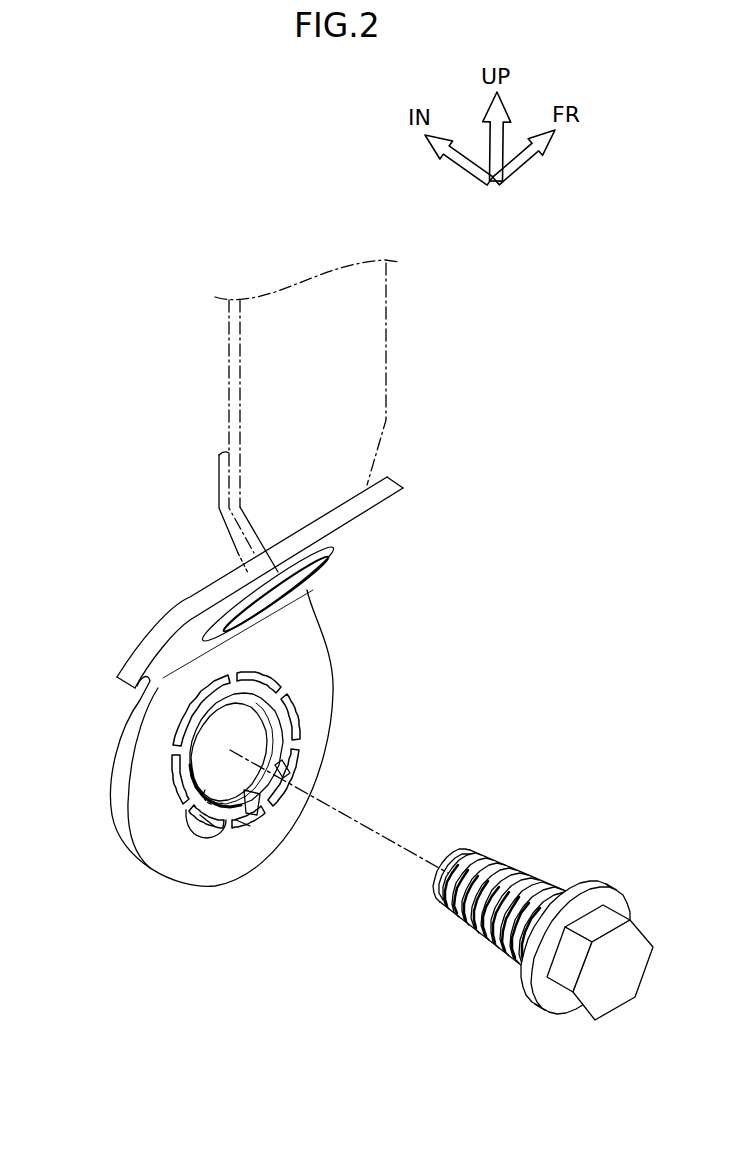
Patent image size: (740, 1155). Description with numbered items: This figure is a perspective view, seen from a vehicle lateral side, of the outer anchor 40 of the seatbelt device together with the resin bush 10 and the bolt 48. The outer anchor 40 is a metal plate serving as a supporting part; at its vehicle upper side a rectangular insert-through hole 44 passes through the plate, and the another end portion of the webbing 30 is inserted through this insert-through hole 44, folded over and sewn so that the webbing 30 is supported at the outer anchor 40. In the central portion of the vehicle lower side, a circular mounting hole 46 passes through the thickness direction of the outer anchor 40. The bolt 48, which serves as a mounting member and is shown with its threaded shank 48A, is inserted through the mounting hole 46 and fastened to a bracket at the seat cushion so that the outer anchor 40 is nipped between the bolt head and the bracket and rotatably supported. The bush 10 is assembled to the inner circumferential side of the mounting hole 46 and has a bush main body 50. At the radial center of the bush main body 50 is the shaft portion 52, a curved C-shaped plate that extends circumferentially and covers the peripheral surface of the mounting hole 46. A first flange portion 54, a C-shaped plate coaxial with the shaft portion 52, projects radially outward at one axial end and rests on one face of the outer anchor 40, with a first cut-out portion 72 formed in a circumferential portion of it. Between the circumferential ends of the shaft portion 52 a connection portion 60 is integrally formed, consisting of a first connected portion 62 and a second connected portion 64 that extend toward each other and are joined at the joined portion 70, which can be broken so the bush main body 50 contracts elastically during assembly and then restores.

The bush 10 is at (166, 820).
The webbing 30 is at (386, 336).
The outer anchor 40 is at (400, 486).
The insert-through hole 44 is at (257, 623).
The mounting hole 46 is at (263, 723).
The bolt 48 is at (614, 1022).
The threaded shaft portion of bolt 48A is at (490, 940).
The bush main body 50 is at (190, 823).
The shaft portion 52 is at (263, 755).
The first flange portion 54 is at (292, 745).
The connection portion 60 is at (268, 760).
The first connected portion 62 is at (250, 800).
The second connected portion 64 is at (220, 800).
The joined portion 70 is at (215, 825).
The first cut-out portion 72 is at (250, 823).